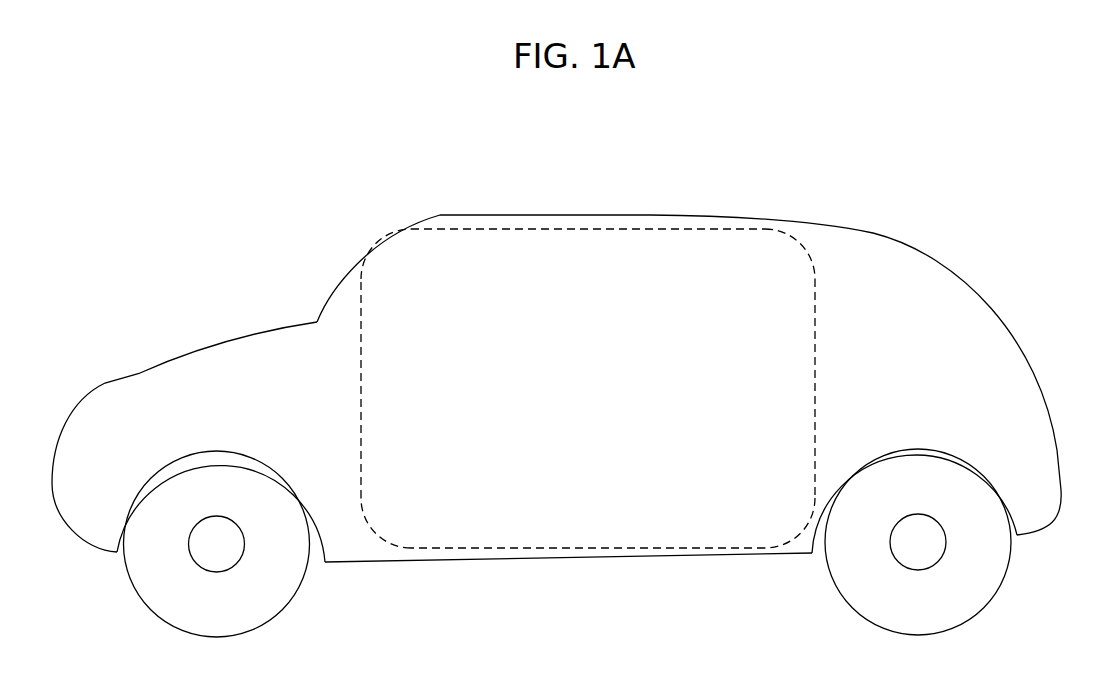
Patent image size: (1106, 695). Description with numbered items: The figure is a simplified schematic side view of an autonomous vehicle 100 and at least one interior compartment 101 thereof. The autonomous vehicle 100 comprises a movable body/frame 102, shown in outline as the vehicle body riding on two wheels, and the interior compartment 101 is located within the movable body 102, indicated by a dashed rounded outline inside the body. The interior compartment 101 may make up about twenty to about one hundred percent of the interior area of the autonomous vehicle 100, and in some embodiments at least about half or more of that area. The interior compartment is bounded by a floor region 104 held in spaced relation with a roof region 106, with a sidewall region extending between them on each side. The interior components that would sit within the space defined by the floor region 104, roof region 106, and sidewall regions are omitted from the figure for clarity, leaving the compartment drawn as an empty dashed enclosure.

The autonomous vehicle 100 is at (710, 148).
The interior compartment 101 is at (457, 301).
The movable body/frame 102 is at (207, 343).
The floor region 104 is at (540, 550).
The roof region 106 is at (522, 228).